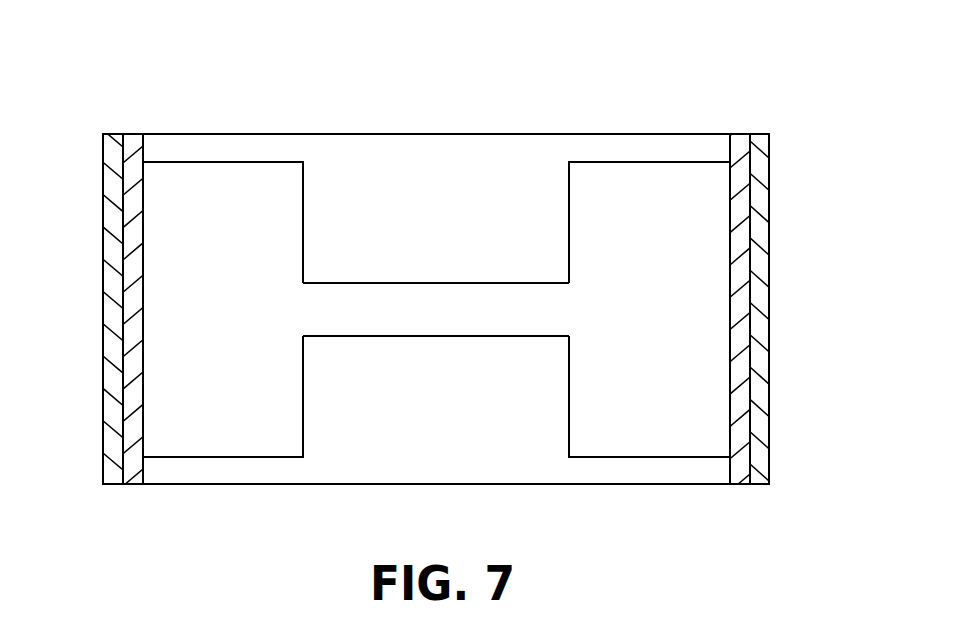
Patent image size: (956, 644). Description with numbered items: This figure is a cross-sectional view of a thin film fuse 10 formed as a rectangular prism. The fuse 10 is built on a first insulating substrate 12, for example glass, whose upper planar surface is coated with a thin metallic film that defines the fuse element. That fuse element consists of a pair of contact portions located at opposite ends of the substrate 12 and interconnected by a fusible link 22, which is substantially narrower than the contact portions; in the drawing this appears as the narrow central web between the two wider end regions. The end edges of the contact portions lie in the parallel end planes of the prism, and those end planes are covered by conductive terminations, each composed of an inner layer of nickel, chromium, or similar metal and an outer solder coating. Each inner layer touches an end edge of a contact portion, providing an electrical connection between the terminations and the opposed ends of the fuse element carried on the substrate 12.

The thin film fuse 10 is at (551, 84).
The first insulating substrate 12 is at (407, 134).
The fusible link 22 is at (424, 285).